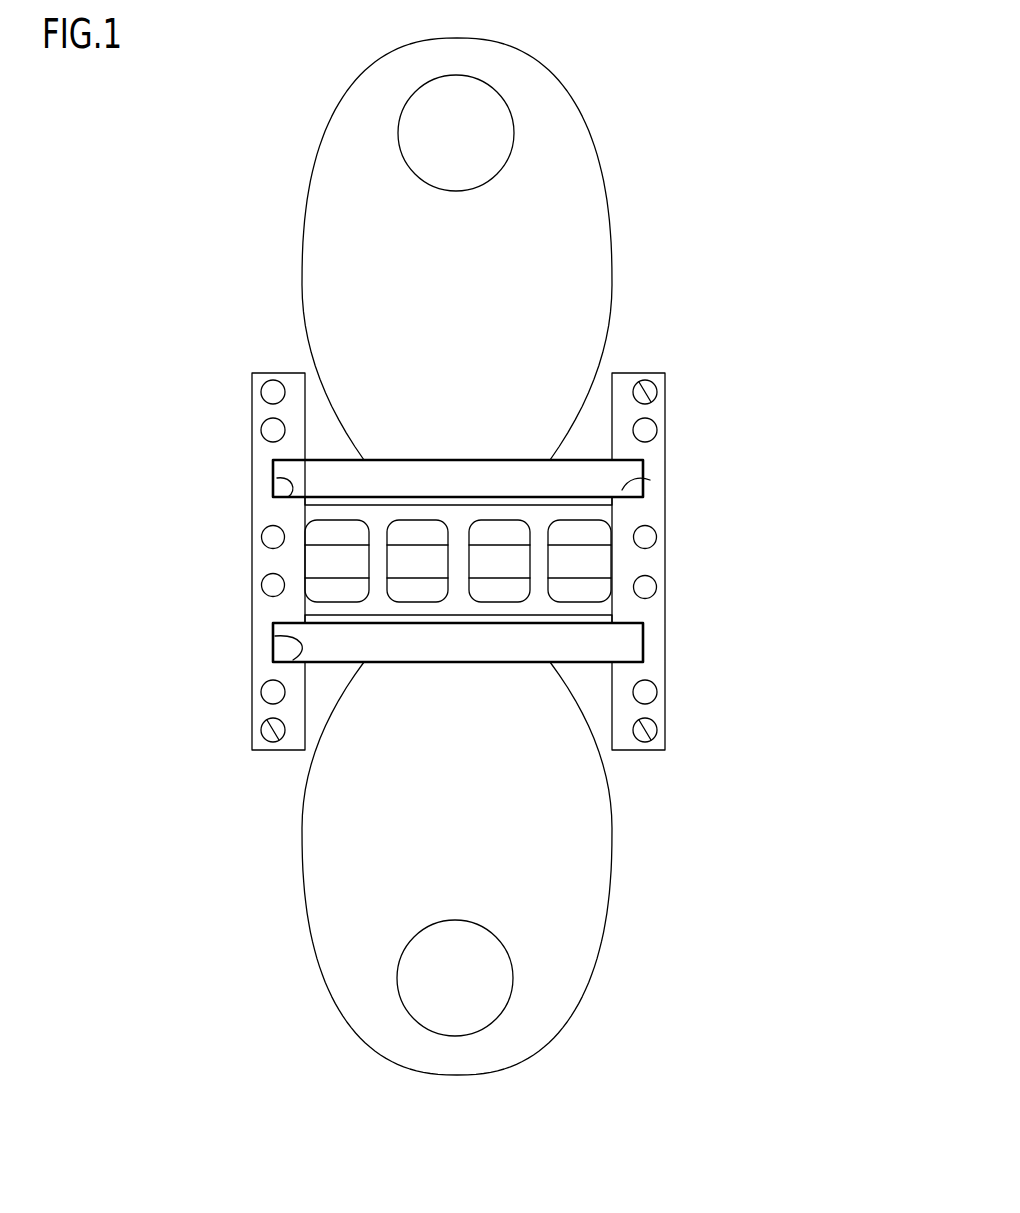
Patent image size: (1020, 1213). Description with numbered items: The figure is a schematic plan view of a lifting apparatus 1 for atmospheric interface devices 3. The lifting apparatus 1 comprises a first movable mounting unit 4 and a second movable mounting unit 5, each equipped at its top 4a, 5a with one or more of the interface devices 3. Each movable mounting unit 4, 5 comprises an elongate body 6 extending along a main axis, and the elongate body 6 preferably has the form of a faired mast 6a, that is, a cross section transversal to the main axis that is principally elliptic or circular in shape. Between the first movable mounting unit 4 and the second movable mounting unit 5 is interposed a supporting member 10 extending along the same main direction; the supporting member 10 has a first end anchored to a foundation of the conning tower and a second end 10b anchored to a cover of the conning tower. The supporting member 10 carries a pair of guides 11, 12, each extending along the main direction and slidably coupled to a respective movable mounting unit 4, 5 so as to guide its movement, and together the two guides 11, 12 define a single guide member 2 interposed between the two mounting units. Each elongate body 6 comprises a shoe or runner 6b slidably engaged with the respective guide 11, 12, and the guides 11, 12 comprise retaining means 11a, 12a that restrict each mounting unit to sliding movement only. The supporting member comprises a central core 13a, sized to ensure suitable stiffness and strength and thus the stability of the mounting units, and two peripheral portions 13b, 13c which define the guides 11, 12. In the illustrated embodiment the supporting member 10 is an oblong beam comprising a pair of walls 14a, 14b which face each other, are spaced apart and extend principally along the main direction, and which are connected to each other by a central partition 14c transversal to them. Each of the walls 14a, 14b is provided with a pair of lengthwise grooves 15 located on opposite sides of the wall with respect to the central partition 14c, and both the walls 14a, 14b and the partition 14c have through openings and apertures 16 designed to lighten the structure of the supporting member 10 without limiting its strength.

The lifting apparatus 1 is at (687, 295).
The guide member 2 is at (673, 707).
The interface device 3 is at (459, 143).
The first movable mounting unit 4 is at (583, 137).
The top of first movable mounting unit 4a is at (343, 178).
The second movable mounting unit 5 is at (608, 932).
The top of second movable mounting unit 5a is at (355, 831).
The elongate body 6 is at (610, 193).
The faired mast 6a is at (610, 238).
The shoe or runner 6b is at (598, 470).
The supporting member 10 is at (668, 557).
The second end of supporting member 10b is at (258, 556).
The guide 11 is at (650, 458).
The retaining means 11a is at (290, 453).
The guide 12 is at (655, 657).
The retaining means 12a is at (597, 670).
The central core 13a is at (272, 565).
The peripheral portion 13b is at (262, 468).
The peripheral portion 13c is at (262, 673).
The wall 14a is at (668, 518).
The wall 14b is at (242, 528).
The central partition 14c is at (540, 597).
The lengthwise groove 15 is at (275, 503).
The through opening or aperture 16 is at (650, 422).